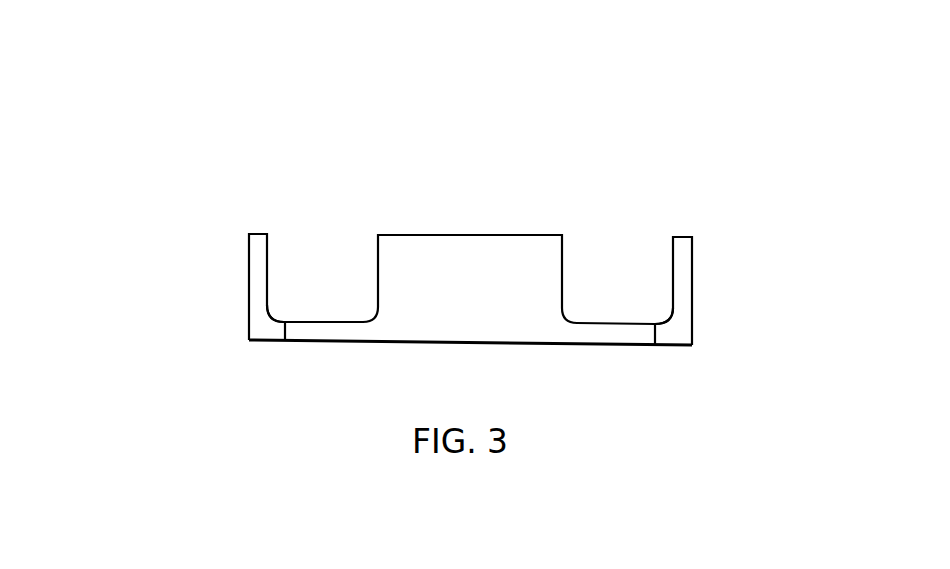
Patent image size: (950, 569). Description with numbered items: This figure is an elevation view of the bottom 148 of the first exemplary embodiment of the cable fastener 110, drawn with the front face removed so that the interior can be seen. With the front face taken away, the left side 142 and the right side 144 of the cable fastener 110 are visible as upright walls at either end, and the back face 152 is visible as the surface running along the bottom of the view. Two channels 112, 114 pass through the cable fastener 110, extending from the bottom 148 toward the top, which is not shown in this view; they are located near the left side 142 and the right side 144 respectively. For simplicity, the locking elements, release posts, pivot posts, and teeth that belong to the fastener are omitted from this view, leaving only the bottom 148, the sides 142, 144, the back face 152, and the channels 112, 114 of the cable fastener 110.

The cable fastener 110 is at (246, 174).
The left side 142 is at (248, 280).
The right side 144 is at (688, 298).
The channel 112 is at (271, 319).
The channel 114 is at (662, 323).
The bottom 148 is at (425, 320).
The back face 152 is at (490, 347).